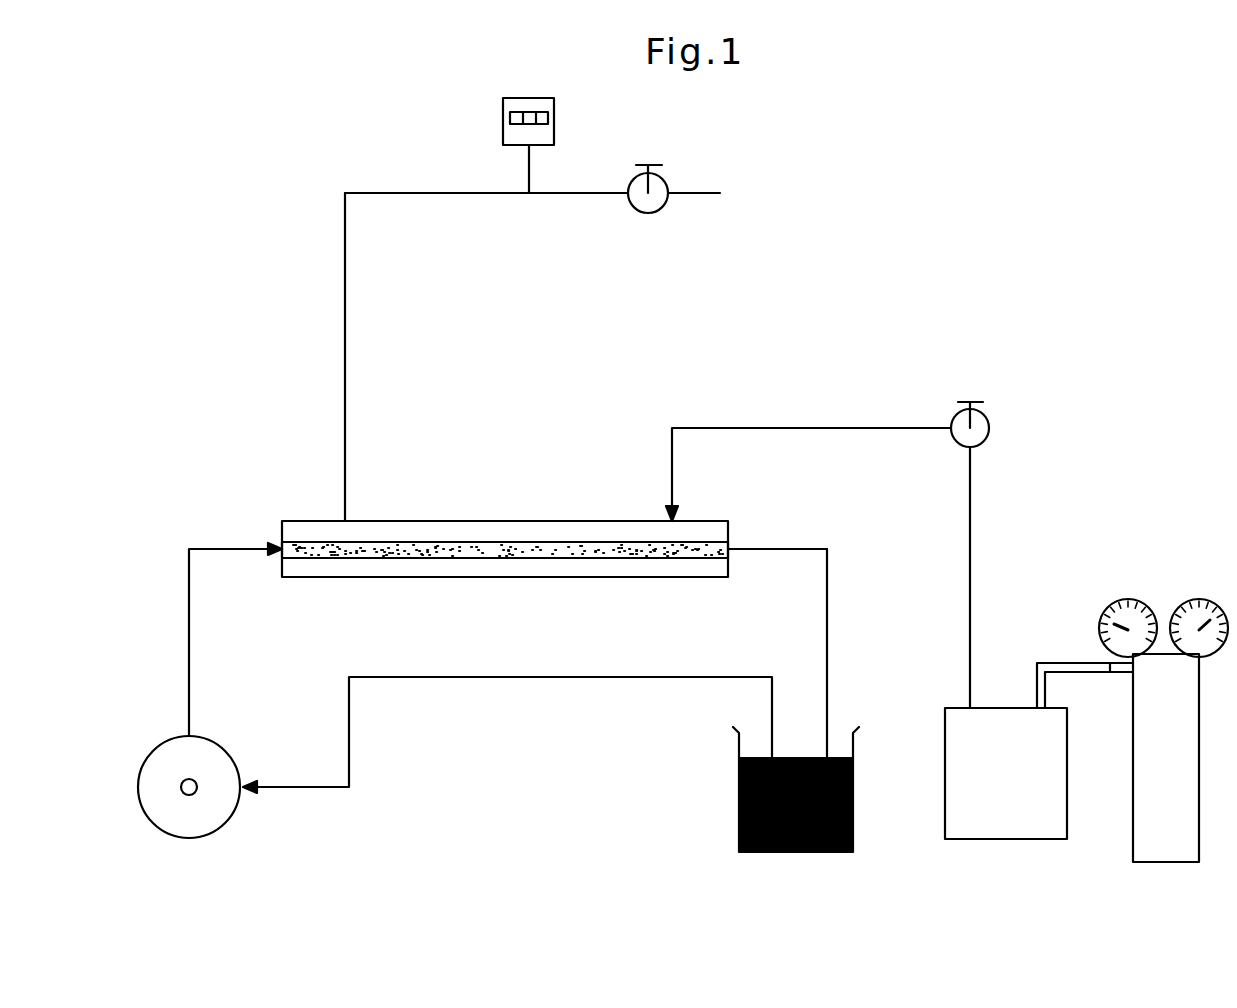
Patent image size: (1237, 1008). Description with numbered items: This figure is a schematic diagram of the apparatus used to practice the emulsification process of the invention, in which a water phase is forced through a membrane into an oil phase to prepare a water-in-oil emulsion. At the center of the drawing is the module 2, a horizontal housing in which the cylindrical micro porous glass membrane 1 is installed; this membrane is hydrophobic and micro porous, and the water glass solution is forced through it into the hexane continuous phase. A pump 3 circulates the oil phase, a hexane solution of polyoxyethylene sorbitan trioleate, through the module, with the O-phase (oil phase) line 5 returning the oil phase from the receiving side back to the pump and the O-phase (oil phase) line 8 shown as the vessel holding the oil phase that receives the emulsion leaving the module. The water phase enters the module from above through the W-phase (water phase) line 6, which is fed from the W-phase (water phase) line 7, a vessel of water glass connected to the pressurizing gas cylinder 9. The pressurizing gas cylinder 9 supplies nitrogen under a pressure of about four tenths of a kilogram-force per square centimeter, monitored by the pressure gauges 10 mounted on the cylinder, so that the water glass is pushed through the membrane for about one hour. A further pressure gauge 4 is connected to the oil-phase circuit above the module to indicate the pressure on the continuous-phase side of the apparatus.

The cylindrical micro porous glass membrane 1 is at (421, 542).
The module 2 is at (547, 521).
The pump 3 is at (151, 750).
The pressure gauge 4 is at (554, 132).
The O-phase (oil phase) line 5 is at (346, 730).
The W-phase (water phase) line 6 is at (833, 428).
The W-phase (water phase) line 7 is at (1045, 783).
The O-phase (oil phase) line 8 is at (738, 777).
The pressurizing gas cylinder 9 is at (1180, 745).
The pressure gauge 10 is at (1194, 602).